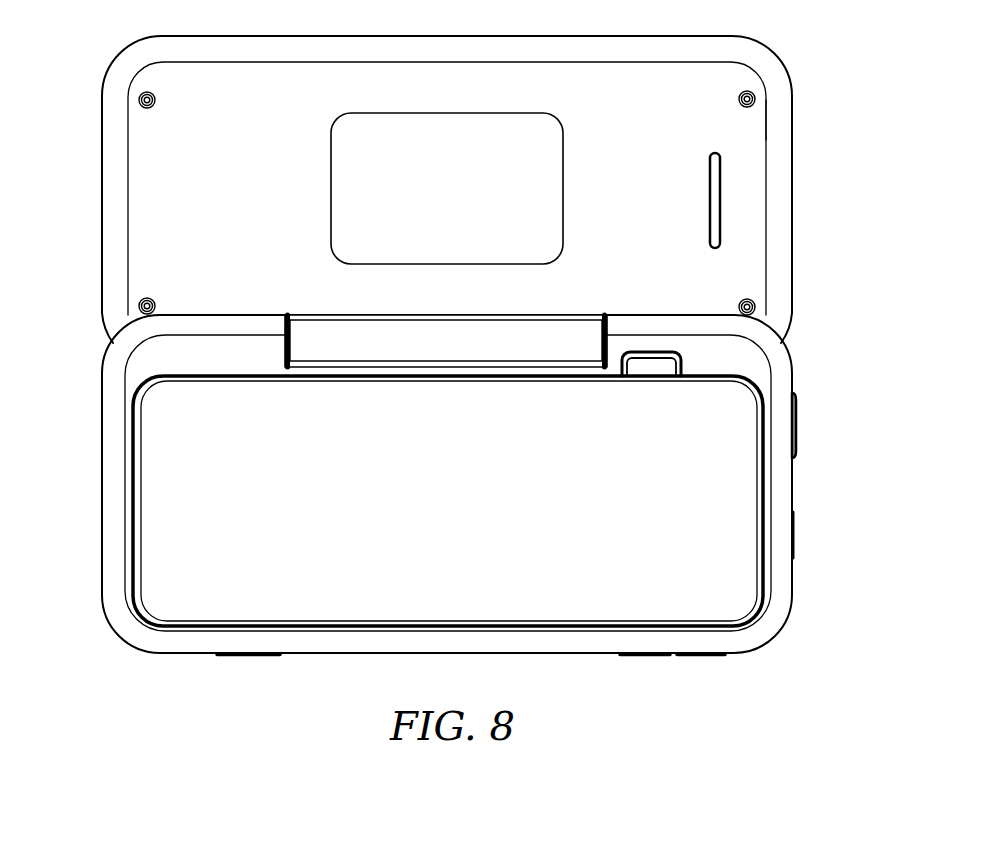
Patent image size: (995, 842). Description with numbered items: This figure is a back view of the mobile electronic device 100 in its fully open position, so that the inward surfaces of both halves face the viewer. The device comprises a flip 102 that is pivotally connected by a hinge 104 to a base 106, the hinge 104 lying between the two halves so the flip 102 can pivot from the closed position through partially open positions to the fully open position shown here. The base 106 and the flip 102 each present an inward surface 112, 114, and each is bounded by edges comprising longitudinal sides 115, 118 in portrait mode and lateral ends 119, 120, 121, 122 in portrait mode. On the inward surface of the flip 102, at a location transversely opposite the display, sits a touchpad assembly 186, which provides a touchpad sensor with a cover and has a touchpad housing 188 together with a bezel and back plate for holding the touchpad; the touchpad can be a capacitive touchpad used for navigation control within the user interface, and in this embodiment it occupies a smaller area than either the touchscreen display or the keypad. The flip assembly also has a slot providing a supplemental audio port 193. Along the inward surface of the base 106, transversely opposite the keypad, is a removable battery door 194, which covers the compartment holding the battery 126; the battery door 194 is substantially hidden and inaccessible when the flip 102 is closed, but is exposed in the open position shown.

The mobile electronic device 100 is at (98, 336).
The flip 102 is at (758, 47).
The hinge 104 is at (540, 325).
The base 106 is at (772, 635).
The inward surface 112 is at (796, 412).
The inward surface 114 is at (750, 125).
The longitudinal side 115 is at (655, 655).
The longitudinal side 118 is at (577, 37).
The lateral end 119 is at (794, 483).
The lateral end 120 is at (795, 203).
The lateral end 121 is at (101, 203).
The lateral end 122 is at (101, 538).
The battery 126 is at (788, 73).
The touchpad assembly 186 is at (340, 184).
The touchpad housing 188 is at (427, 48).
The supplemental audio port 193 is at (708, 178).
The removable battery door 194 is at (740, 573).